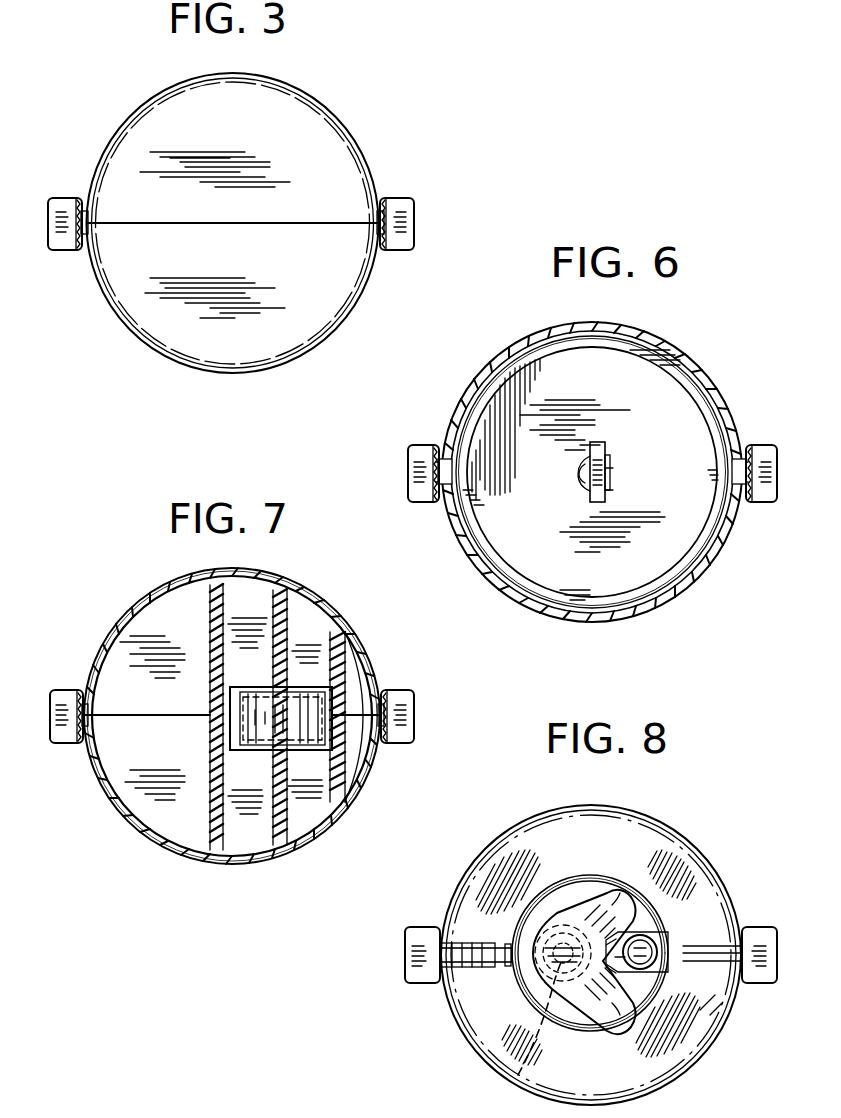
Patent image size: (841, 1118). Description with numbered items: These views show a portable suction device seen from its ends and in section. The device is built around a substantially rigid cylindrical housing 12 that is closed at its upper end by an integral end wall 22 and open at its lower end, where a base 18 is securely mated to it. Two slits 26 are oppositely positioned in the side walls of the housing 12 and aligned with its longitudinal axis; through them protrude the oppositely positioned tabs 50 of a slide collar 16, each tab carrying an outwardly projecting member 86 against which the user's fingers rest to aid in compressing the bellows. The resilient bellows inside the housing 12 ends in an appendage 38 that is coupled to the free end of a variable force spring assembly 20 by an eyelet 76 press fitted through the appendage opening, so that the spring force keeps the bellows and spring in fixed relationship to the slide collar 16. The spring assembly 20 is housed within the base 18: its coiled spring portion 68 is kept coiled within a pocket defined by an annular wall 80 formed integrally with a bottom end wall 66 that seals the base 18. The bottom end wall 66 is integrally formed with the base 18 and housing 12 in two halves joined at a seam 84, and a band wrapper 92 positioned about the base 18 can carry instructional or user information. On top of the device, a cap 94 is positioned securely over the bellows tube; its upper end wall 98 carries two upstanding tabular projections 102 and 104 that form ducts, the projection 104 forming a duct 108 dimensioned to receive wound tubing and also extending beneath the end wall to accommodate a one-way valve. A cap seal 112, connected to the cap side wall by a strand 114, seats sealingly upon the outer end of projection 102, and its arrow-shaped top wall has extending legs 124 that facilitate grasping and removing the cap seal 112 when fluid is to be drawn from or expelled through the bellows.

In FIG. 6, the housing 12 is at (712, 374).
In FIG. 8, the housing 12 is at (715, 864).
In FIG. 6, the slide collar 16 is at (606, 360).
In FIG. 7, the base 18 is at (119, 602).
In FIG. 6, the variable force spring assembly 20 is at (590, 490).
In FIG. 8, the end wall 22 is at (512, 1024).
In FIG. 6, the slits 26 is at (456, 479).
In FIG. 6, the appendage 38 is at (602, 453).
In FIG. 3, the tabs 50 is at (88, 200).
In FIG. 6, the tabs 50 is at (438, 500).
In FIG. 7, the tabs 50 is at (82, 744).
In FIG. 3, the bottom end wall 66 is at (318, 148).
In FIG. 7, the coiled spring portion 68 is at (242, 740).
In FIG. 6, the eyelet 76 is at (578, 464).
In FIG. 7, the annular wall 80 is at (294, 715).
In FIG. 3, the seam 84 is at (216, 224).
In FIG. 7, the seam 84 is at (156, 692).
In FIG. 3, the outwardly projecting member 86 is at (72, 252).
In FIG. 6, the outwardly projecting member 86 is at (413, 462).
In FIG. 7, the outwardly projecting member 86 is at (72, 696).
In FIG. 8, the outwardly projecting member 86 is at (426, 936).
In FIG. 7, the band wrapper 92 is at (130, 828).
In FIG. 8, the cap 94 is at (646, 884).
In FIG. 8, the upper end wall 98 is at (565, 893).
In FIG. 8, the tabular projection 102 is at (520, 1078).
In FIG. 8, the tabular projection 104 is at (648, 938).
In FIG. 8, the duct 108 is at (644, 956).
In FIG. 8, the cap seal 112 is at (528, 926).
In FIG. 8, the strand 114 is at (482, 964).
In FIG. 8, the extending legs 124 is at (612, 900).